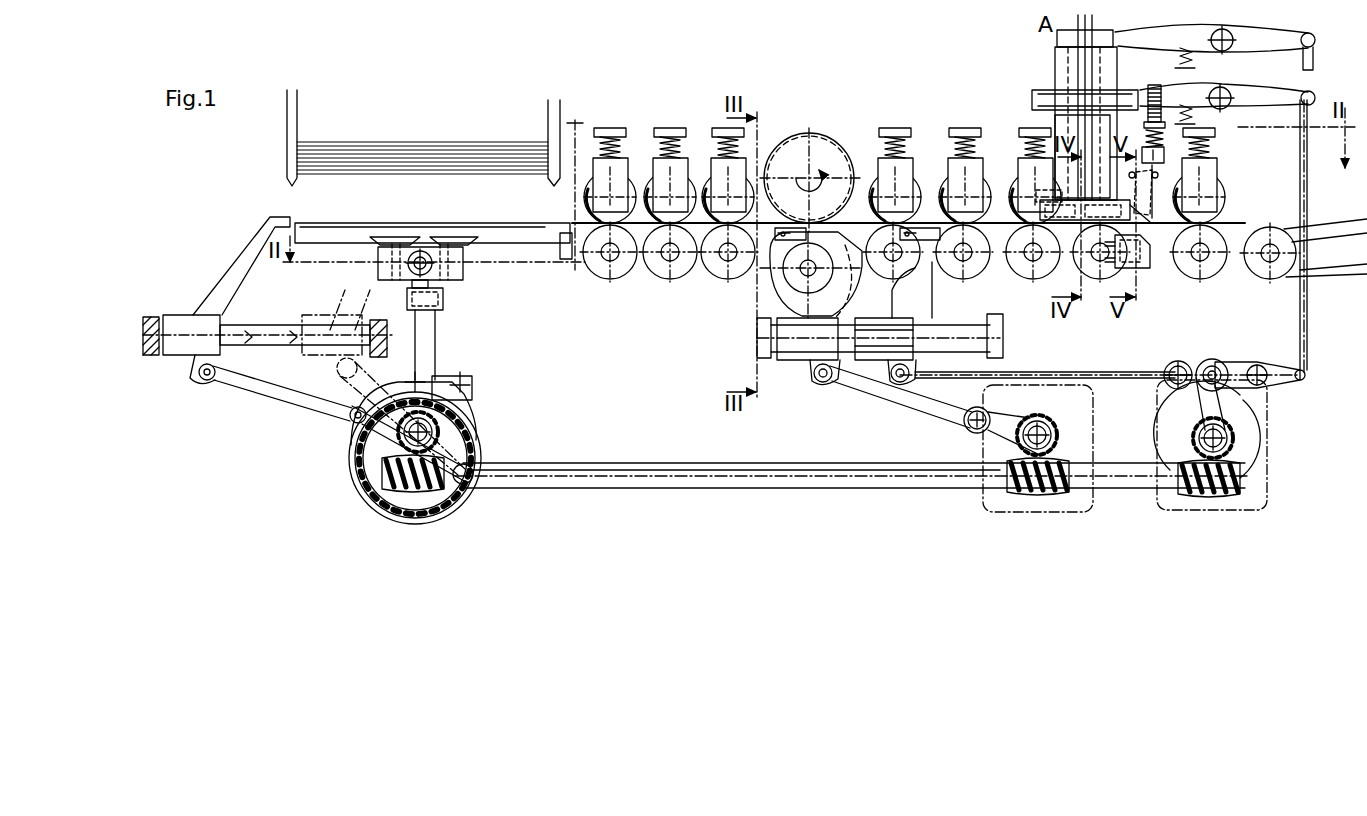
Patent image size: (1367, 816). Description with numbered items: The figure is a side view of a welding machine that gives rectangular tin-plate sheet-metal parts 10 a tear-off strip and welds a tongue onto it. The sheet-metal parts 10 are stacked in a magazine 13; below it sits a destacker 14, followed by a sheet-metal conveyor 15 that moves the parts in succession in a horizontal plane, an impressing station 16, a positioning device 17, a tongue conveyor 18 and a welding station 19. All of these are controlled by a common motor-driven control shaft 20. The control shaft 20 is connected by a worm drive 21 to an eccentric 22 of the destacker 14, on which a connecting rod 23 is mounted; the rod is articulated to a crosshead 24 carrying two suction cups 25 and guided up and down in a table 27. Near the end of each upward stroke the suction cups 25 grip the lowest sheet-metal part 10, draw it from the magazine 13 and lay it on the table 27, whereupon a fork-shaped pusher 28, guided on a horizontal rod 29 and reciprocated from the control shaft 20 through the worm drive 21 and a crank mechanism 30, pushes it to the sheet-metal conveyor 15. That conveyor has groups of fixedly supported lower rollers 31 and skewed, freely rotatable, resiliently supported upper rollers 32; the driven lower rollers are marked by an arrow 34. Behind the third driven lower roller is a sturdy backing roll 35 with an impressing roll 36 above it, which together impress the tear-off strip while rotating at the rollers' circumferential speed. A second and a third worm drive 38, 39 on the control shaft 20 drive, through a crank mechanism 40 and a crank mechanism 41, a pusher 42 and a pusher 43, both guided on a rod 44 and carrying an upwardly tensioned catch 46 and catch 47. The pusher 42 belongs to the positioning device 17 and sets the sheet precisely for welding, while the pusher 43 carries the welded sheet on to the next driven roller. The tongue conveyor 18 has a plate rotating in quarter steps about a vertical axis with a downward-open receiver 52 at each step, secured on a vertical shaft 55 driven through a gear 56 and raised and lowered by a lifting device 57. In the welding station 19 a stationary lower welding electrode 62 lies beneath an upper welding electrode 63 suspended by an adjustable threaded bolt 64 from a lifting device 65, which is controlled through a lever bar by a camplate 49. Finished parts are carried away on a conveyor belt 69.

The sheet-metal parts 10 is at (420, 140).
The magazine 13 is at (272, 146).
The destacker 14 is at (213, 405).
The sheet-metal conveyor 15 is at (672, 300).
The impressing station 16 is at (813, 126).
The positioning device 17 is at (813, 389).
The tongue conveyor 18 is at (1030, 69).
The welding station 19 is at (1163, 263).
The control shaft 20 is at (608, 461).
The worm drive 21 is at (372, 490).
The eccentric 22 is at (376, 458).
The connecting rod 23 is at (437, 341).
The crosshead 24 is at (455, 276).
The suction cups 25 is at (446, 238).
The table 27 is at (538, 243).
The fork-shaped pusher 28 is at (180, 315).
The horizontal rod 29 is at (271, 328).
The crank mechanism 30 is at (332, 425).
The lower rollers 31 is at (664, 266).
The upper rollers 32 is at (654, 198).
The arrow 34 is at (604, 264).
The backing roll 35 is at (792, 283).
The impressing roll 36 is at (830, 150).
The second worm drive 38 is at (1002, 492).
The third worm drive 39 is at (1186, 500).
The crank mechanism 40 is at (962, 430).
The crank mechanism 41 is at (1160, 386).
The pusher 42 is at (880, 276).
The pusher 43 is at (914, 303).
The rod 44 is at (968, 346).
The catch 46 is at (778, 252).
The catch 47 is at (877, 232).
The camplate 49 is at (1256, 425).
The receiver 52 is at (1090, 240).
The vertical shaft 55 is at (1062, 58).
The gear 56 is at (1032, 100).
The lifting device 57 is at (1322, 43).
The lower welding electrode 62 is at (1146, 269).
The upper welding electrode 63 is at (1153, 194).
The adjustable threaded bolt 64 is at (1151, 90).
The lifting device 65 is at (1318, 108).
The conveyor belt 69 is at (1323, 229).